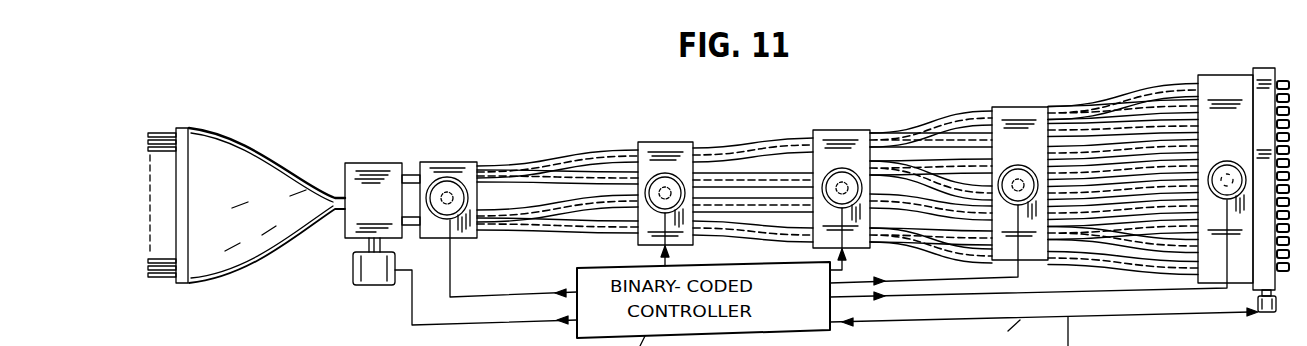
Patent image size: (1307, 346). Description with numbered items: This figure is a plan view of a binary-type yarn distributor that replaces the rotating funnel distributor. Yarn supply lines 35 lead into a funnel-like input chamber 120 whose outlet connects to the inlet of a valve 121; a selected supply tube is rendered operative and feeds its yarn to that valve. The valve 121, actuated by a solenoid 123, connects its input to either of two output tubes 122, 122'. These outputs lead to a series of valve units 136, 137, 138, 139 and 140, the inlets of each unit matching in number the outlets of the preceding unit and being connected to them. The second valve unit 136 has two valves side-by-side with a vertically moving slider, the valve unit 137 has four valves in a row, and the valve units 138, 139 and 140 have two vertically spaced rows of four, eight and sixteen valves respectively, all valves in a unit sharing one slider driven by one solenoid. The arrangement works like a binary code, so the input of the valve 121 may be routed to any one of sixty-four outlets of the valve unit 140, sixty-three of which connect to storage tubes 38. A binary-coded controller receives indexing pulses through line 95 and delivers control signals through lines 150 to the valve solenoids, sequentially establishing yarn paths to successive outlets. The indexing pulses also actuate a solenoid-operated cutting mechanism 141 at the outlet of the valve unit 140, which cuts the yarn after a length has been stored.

The yarn supply lines 35 is at (160, 132).
The funnel-like input chamber 120 is at (236, 155).
The valve 121 is at (365, 168).
The output tube 122 is at (420, 156).
The output tube 122' is at (425, 244).
The solenoid 123 is at (353, 265).
The second valve unit 136 is at (452, 168).
The valve unit 137 is at (672, 148).
The valve unit 138 is at (842, 136).
The valve unit 139 is at (1043, 87).
The valve unit 140 is at (1223, 82).
The solenoid-operated cutting mechanism 141 is at (1264, 268).
The storage tubes 38 is at (1287, 92).
The lines 150 is at (813, 250).
The line 95 is at (1044, 327).